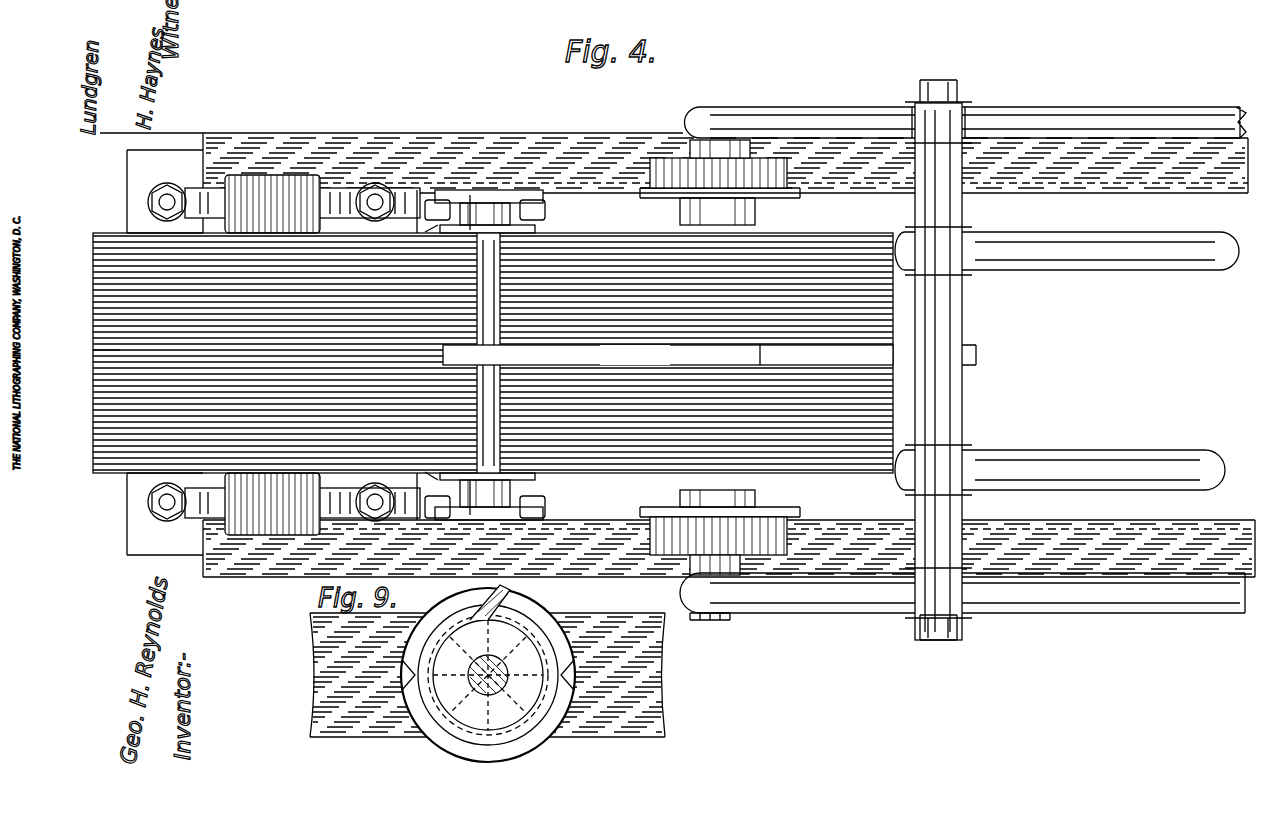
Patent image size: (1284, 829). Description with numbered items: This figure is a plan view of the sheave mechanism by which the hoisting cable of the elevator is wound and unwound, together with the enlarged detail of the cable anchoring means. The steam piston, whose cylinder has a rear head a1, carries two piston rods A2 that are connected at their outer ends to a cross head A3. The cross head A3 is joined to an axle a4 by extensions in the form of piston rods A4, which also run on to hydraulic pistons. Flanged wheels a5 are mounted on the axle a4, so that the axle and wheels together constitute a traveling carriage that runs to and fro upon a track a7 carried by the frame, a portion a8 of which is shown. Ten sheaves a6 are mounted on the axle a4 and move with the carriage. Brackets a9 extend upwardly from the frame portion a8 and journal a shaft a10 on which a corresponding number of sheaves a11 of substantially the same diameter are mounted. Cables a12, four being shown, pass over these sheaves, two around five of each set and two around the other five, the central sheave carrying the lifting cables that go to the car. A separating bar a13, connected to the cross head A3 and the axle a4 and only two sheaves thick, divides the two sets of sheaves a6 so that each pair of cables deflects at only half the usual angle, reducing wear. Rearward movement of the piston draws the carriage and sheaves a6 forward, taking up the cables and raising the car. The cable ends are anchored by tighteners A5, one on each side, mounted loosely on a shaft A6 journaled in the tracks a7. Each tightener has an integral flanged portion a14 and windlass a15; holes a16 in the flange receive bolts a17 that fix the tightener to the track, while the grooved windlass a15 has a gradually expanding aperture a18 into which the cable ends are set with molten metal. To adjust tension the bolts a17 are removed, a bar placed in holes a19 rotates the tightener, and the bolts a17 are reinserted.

In FIG. 4, the rear head a1 is at (169, 352).
In FIG. 4, the sheaves a11 is at (500, 350).
In FIG. 4, the axle a4 is at (712, 620).
In FIG. 4, the flanged wheels a5 is at (718, 357).
In FIG. 4, the sheaves a6 is at (668, 352).
In FIG. 4, the track a7 is at (729, 355).
In FIG. 9, the track a7 is at (630, 630).
In FIG. 4, the frame portion a8 is at (165, 351).
In FIG. 4, the brackets a9 is at (284, 352).
In FIG. 4, the shaft a10 is at (272, 349).
In FIG. 4, the cables a12 is at (812, 240).
In FIG. 4, the separating bar a13 is at (776, 354).
In FIG. 4, the flanged portion a14 is at (460, 540).
In FIG. 9, the flanged portion a14 is at (488, 676).
In FIG. 9, the windlass a15 is at (488, 675).
In FIG. 9, the holes a16 is at (420, 745).
In FIG. 4, the bolts a17 is at (565, 512).
In FIG. 9, the bolts a17 is at (412, 680).
In FIG. 9, the aperture a18 is at (492, 619).
In FIG. 4, the holes a19 is at (496, 357).
In FIG. 4, the piston rods A2 is at (1067, 348).
In FIG. 4, the cross head A3 is at (945, 360).
In FIG. 4, the piston rods A4 is at (963, 363).
In FIG. 4, the tighteners A5 is at (508, 530).
In FIG. 4, the shaft A6 is at (501, 353).
In FIG. 9, the shaft A6 is at (488, 675).